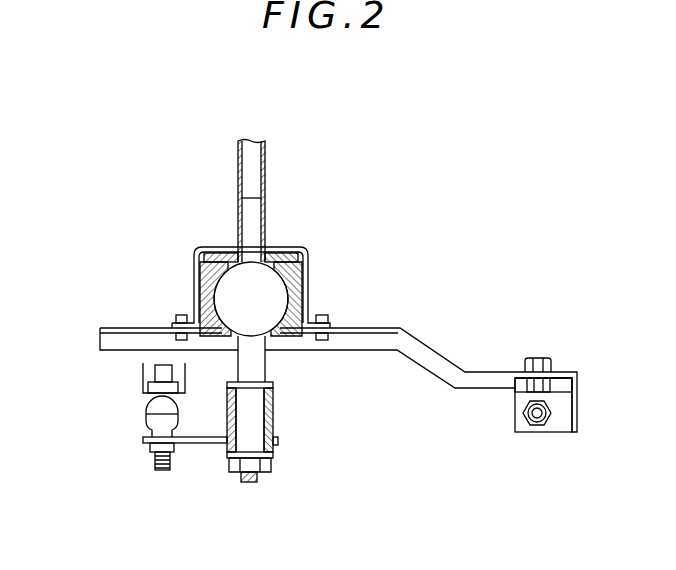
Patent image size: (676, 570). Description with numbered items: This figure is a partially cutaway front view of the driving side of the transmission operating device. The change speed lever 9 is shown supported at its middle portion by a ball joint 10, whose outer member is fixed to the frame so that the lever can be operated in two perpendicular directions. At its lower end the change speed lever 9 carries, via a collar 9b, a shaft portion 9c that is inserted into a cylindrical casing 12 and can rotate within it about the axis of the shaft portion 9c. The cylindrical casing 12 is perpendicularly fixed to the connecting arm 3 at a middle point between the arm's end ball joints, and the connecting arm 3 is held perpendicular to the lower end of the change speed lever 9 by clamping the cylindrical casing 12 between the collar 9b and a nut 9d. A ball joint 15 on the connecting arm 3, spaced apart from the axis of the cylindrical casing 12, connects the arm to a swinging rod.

The change speed lever 9 is at (253, 166).
The ball joint 10 is at (284, 234).
The collar 9b is at (273, 384).
The shaft portion 9c is at (255, 413).
The cylindrical casing 12 is at (277, 433).
The nut 9d is at (278, 463).
The connecting arm 3 is at (200, 443).
The ball joint 15 is at (155, 407).